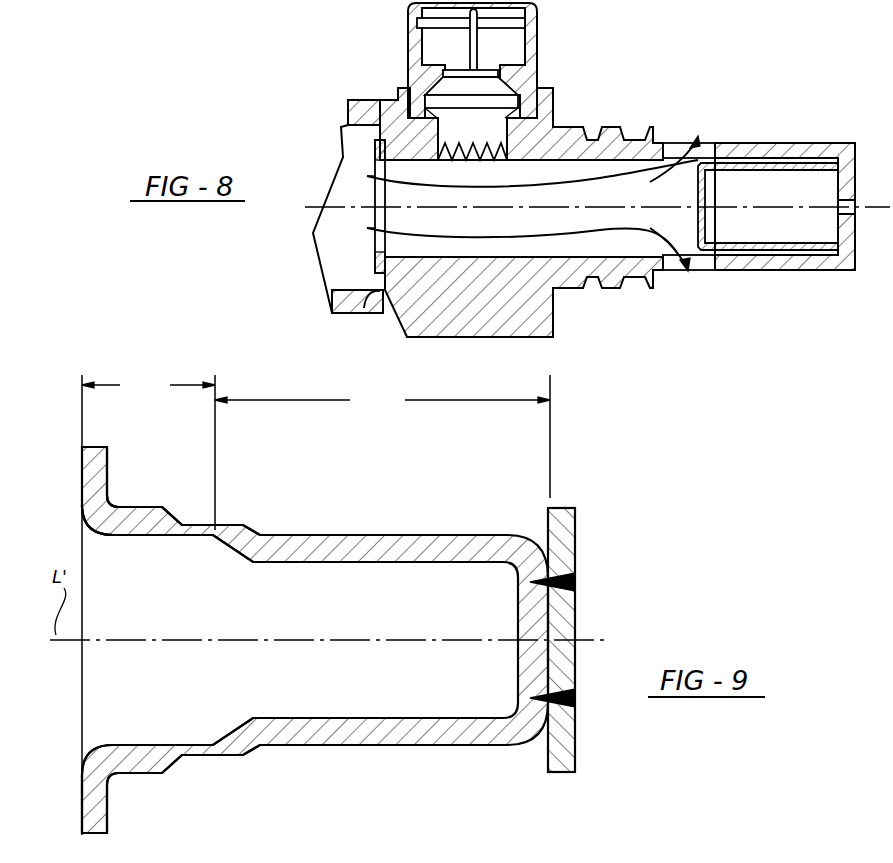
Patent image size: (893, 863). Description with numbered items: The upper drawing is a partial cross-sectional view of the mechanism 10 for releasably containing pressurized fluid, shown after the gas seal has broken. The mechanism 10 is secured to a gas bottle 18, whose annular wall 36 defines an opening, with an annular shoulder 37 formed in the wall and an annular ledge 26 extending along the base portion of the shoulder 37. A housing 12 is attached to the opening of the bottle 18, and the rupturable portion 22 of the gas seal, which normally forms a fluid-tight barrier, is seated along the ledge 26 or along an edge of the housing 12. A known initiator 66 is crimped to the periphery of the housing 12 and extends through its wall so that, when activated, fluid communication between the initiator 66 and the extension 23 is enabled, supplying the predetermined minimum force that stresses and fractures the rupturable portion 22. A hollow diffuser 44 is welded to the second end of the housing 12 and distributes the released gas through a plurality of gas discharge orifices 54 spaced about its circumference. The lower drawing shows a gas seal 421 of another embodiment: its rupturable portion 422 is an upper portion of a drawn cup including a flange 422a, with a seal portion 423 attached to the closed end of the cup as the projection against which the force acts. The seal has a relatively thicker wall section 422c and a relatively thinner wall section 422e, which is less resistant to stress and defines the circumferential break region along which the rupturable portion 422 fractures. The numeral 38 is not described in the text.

In FIG. 8, the mechanism 10 is at (505, 357).
In FIG. 8, the housing 12 is at (553, 337).
In FIG. 8, the gas bottle 18 is at (372, 107).
In FIG. 8, the rupturable portion 22 is at (377, 152).
In FIG. 8, the extension 23 is at (745, 180).
In FIG. 8, the annular ledge 26 is at (370, 300).
In FIG. 8, the annular wall 36 is at (376, 305).
In FIG. 8, the annular shoulder 37 is at (384, 306).
In FIG. 8, the component 38 is at (61, 6).
In FIG. 8, the diffuser 44 is at (855, 143).
In FIG. 8, the gas discharge orifices 54 is at (672, 150).
In FIG. 8, the initiator 66 is at (473, 44).
In FIG. 9, the gas seal 421 is at (458, 827).
In FIG. 9, the rupturable portion 422 is at (160, 773).
In FIG. 9, the flange 422a is at (107, 834).
In FIG. 9, the thicker wall section 422c is at (137, 527).
In FIG. 9, the thinner wall section 422e is at (200, 530).
In FIG. 9, the seal portion 423 is at (573, 508).